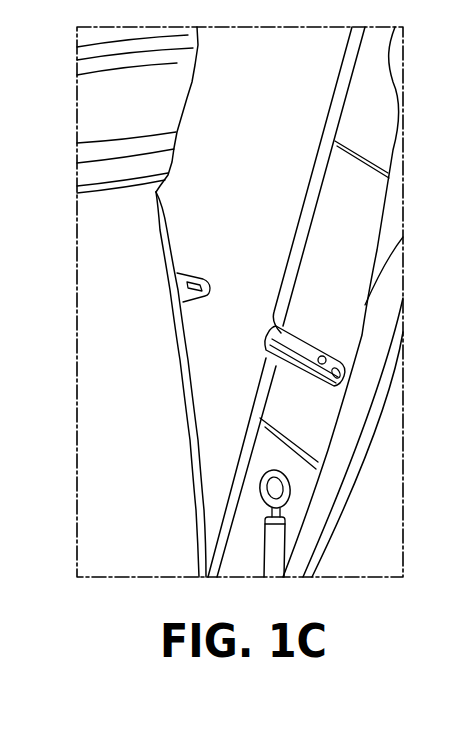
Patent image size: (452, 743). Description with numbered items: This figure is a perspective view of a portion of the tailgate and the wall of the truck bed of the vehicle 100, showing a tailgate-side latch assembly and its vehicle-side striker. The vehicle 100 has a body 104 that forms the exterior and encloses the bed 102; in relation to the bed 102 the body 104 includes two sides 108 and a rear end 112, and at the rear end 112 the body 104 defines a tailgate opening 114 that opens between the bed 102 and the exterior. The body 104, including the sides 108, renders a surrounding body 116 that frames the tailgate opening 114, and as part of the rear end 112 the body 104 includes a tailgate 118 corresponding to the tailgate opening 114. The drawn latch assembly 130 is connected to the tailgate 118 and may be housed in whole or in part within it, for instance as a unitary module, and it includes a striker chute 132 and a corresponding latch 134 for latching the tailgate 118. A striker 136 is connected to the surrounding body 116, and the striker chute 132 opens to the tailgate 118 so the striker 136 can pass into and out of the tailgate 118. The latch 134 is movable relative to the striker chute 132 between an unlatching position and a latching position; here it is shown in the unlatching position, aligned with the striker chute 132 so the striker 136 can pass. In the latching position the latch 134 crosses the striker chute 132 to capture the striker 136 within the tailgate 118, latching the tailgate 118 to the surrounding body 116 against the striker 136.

The vehicle 100 is at (70, 73).
The bed 102 is at (113, 150).
The body 104 is at (70, 104).
The sides 108 is at (117, 173).
The rear end 112 is at (100, 196).
The tailgate opening 114 is at (182, 250).
The surrounding body 116 is at (178, 273).
The vehicle-side striker 136 is at (183, 285).
The tailgate 118 is at (333, 103).
The tailgate-side latch assembly 130 is at (268, 346).
The striker chute 132 is at (278, 338).
The latch 134 is at (300, 323).